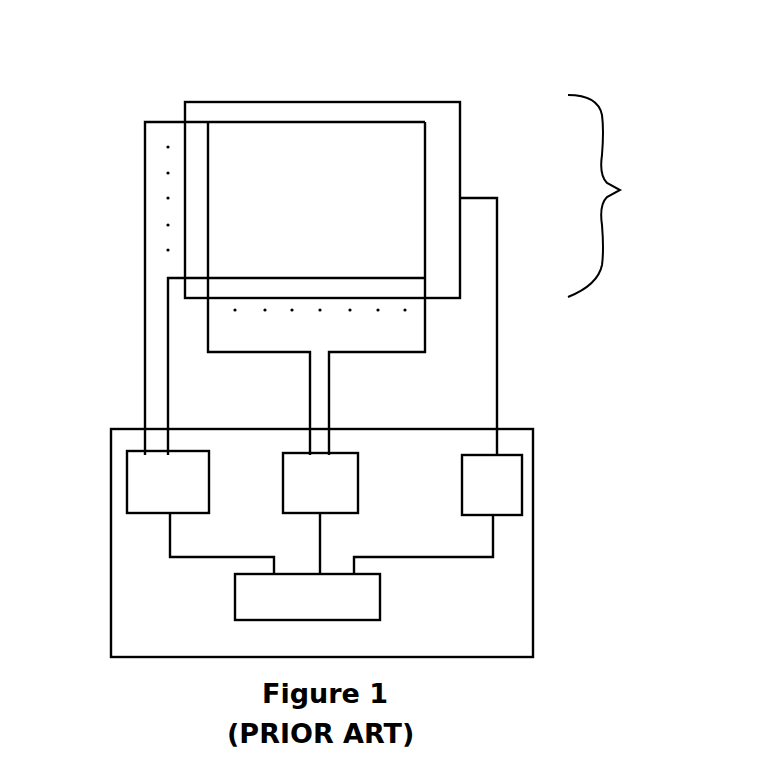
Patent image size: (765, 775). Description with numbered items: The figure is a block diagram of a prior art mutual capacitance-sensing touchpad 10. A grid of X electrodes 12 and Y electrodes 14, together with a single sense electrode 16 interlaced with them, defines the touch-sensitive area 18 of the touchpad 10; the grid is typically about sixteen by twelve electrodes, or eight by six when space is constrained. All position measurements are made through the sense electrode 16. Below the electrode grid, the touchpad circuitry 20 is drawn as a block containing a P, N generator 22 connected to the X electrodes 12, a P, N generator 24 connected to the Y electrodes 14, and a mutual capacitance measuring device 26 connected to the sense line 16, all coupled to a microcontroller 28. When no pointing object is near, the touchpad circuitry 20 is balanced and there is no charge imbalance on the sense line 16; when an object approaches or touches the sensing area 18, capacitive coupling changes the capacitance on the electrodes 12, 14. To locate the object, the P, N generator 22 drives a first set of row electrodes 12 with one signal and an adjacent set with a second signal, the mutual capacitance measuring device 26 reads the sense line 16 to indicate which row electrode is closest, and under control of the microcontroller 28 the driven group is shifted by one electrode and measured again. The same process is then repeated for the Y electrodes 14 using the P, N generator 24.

The touchpad 10 is at (415, 93).
The X electrodes 12 is at (154, 271).
The Y electrodes 14 is at (432, 368).
The sense electrode 16 is at (502, 218).
The touch-sensitive area 18 is at (609, 196).
The touchpad circuitry 20 is at (533, 562).
The P, N generator 22 is at (127, 480).
The P, N generator 24 is at (358, 477).
The mutual capacitance measuring device 26 is at (462, 490).
The microcontroller 28 is at (380, 600).